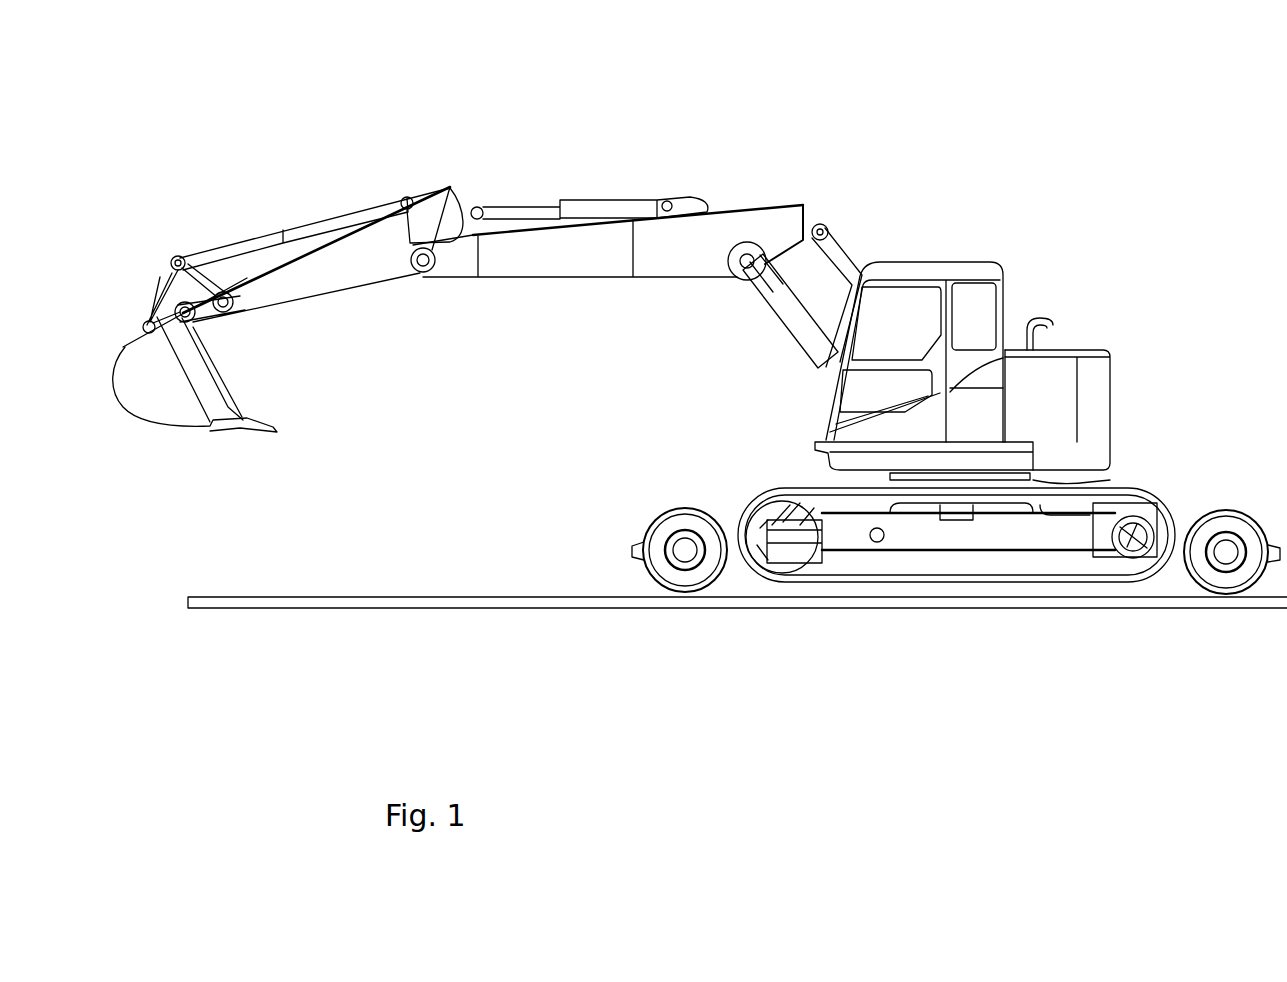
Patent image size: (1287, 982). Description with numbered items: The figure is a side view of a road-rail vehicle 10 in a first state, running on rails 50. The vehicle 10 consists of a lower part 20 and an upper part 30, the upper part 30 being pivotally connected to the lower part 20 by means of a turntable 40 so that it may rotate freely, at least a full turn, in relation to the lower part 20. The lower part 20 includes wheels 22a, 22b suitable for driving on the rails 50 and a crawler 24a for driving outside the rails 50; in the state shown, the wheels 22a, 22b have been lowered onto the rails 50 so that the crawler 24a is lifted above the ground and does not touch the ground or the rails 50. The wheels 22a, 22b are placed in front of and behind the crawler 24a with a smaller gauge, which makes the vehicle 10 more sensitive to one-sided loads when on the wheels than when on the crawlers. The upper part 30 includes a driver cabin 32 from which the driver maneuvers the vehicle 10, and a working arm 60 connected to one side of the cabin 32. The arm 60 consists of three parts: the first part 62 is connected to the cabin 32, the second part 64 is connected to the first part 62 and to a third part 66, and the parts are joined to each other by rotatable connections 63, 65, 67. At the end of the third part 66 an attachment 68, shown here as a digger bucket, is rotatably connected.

The road-rail vehicle 10 is at (1093, 182).
The lower part 20 is at (895, 550).
The wheel 22a is at (691, 580).
The wheel 22b is at (1234, 578).
The crawler 24a is at (983, 580).
The upper part 30 is at (1047, 333).
The driver cabin 32 is at (937, 262).
The turntable 40 is at (1033, 473).
The rails 50 is at (402, 606).
The working arm 60 is at (604, 241).
The first part 62 is at (815, 344).
The rotatable connection 63 is at (746, 252).
The second part 64 is at (566, 260).
The rotatable connection 65 is at (406, 206).
The third part 66 is at (352, 268).
The rotatable connection 67 is at (176, 260).
The attachment 68 is at (180, 410).